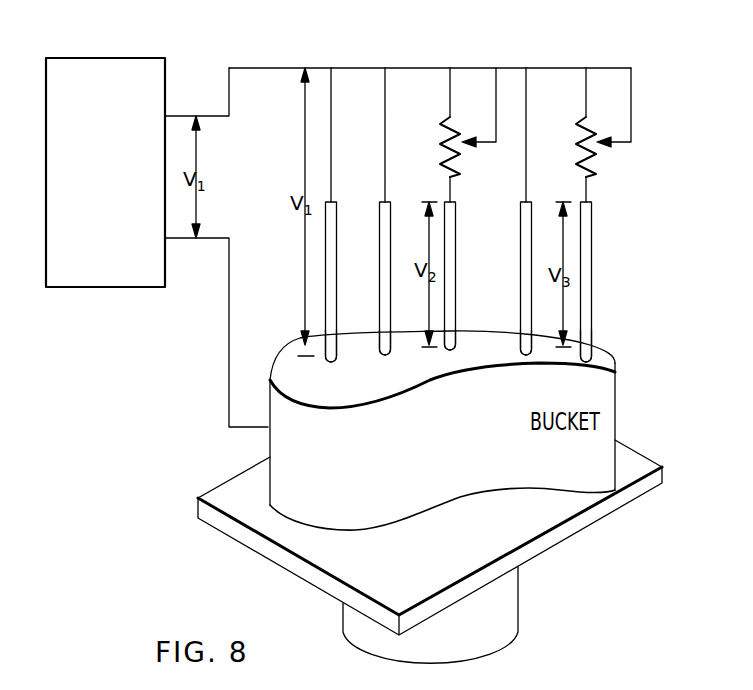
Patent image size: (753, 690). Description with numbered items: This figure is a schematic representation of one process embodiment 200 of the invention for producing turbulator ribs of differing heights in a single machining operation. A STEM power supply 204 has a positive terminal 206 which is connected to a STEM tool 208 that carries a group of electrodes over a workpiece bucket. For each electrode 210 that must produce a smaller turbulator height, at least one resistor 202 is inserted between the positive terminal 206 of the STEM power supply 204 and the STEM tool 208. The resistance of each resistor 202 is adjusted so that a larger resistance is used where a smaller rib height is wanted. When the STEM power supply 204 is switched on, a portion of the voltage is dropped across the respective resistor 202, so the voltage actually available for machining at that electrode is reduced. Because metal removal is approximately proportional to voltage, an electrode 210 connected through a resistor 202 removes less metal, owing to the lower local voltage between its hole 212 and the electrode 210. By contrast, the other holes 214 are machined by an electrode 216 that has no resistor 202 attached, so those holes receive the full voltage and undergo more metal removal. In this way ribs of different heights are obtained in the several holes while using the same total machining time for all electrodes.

The embodiment 200 is at (184, 23).
The resistor 202 is at (452, 117).
The STEM power supply 204 is at (103, 232).
The positive terminal 206 is at (166, 242).
The STEM tool 208 is at (357, 92).
The electrode 210 is at (456, 230).
The hole 212 is at (456, 332).
The hole 214 is at (338, 340).
The electrode 216 is at (336, 220).